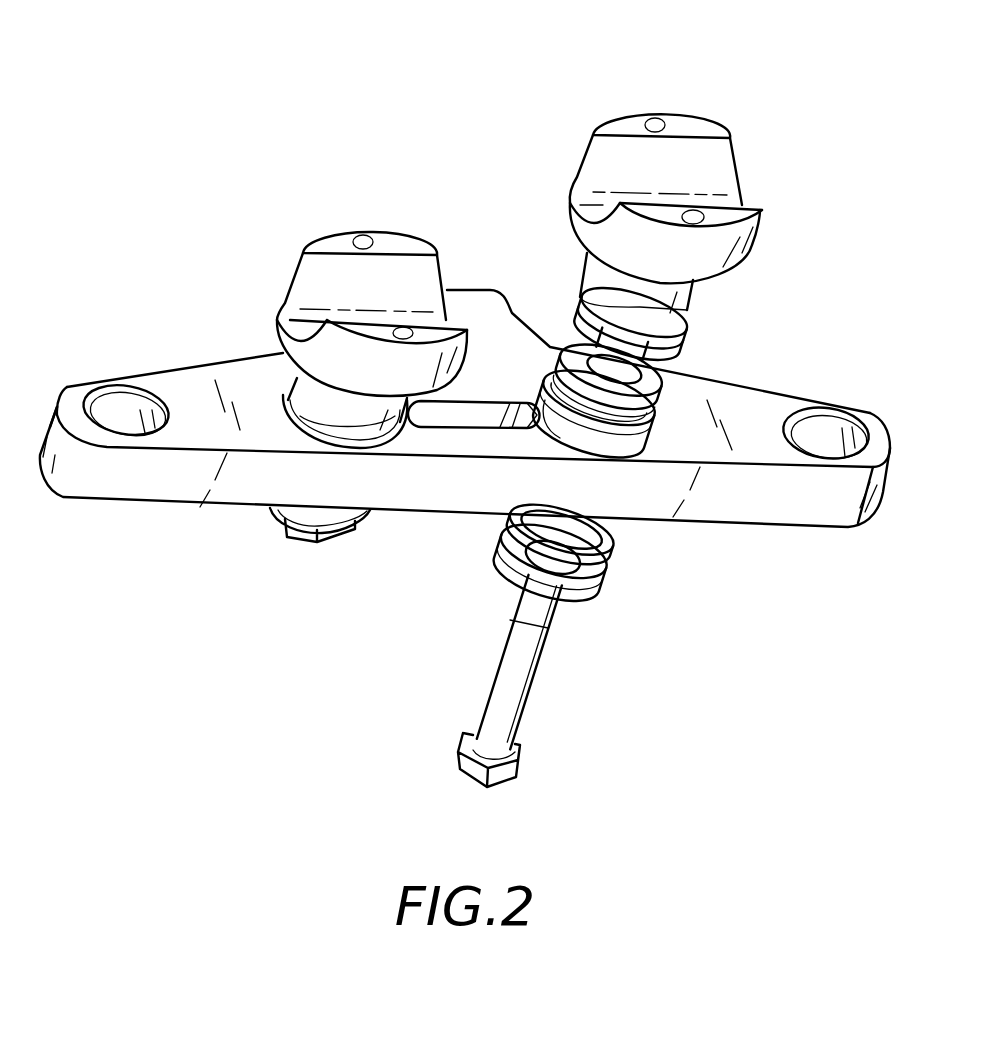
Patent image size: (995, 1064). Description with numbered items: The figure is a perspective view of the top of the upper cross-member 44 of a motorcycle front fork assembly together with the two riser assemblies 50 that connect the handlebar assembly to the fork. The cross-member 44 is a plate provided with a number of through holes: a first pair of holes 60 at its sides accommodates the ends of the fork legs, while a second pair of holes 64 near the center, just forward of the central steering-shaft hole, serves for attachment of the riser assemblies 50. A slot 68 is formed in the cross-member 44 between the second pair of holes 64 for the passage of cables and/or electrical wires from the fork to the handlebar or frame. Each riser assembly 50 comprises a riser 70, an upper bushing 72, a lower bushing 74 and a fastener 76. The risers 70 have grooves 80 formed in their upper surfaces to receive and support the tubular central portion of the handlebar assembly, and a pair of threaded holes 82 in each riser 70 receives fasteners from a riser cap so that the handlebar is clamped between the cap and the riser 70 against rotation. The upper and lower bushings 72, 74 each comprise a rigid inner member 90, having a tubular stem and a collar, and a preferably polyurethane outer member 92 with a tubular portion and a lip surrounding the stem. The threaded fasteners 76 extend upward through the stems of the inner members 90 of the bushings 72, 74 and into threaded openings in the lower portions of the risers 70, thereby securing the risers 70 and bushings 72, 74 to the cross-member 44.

The upper cross-member 44 is at (752, 420).
The riser assembly 50 is at (376, 206).
The first pair of holes 60 is at (127, 412).
The second pair of holes 64 is at (562, 422).
The slot 68 is at (480, 417).
The riser 70 is at (340, 248).
The upper bushing 72 is at (562, 327).
The lower bushing 74 is at (490, 535).
The fastener 76 is at (518, 705).
The groove 80 is at (305, 297).
The threaded hole 82 is at (405, 330).
The inner member 90 is at (678, 328).
The outer member 92 is at (653, 386).